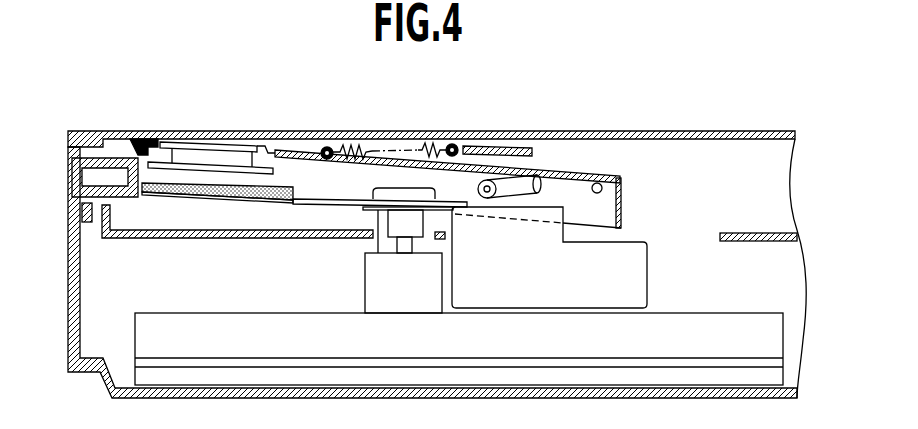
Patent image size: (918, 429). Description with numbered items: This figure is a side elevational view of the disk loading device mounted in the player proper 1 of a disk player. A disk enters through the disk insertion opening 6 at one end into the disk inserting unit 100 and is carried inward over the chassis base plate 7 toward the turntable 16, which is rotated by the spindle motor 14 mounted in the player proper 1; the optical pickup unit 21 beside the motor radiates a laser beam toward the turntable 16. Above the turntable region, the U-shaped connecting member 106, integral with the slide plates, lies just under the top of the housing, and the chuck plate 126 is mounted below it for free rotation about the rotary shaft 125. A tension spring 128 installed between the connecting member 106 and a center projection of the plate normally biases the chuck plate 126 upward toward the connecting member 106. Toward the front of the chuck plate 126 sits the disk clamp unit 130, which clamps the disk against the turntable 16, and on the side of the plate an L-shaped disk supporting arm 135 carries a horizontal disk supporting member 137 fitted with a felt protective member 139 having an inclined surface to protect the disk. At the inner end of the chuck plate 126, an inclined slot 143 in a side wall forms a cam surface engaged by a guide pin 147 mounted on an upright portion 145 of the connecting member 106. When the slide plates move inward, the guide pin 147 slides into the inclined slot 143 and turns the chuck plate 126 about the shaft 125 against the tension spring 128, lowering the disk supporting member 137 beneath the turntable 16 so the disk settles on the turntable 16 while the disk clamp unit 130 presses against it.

The player proper 1 is at (72, 350).
The disk insertion opening 6 is at (98, 176).
The chassis base plate 7 is at (132, 238).
The spindle motor 14 is at (397, 294).
The turntable 16 is at (378, 212).
The optical pickup unit 21 is at (628, 294).
The disk inserting unit 100 is at (140, 157).
The U-shaped connecting member 106 is at (493, 146).
The rotary shaft 125 is at (602, 184).
The chuck plate 126 is at (595, 174).
The tension spring 128 is at (347, 146).
The disk clamp unit 130 is at (186, 145).
The disk supporting arm 135 is at (306, 207).
The disk supporting member 137 is at (184, 190).
The felt protective member 139 is at (228, 196).
The inclined slot 143 is at (533, 178).
The upright portion 145 is at (602, 212).
The guide pin 147 is at (483, 182).